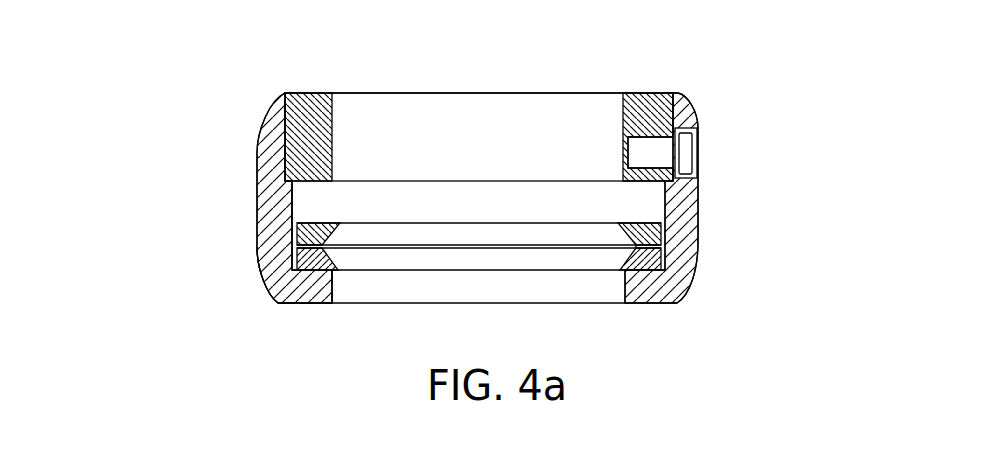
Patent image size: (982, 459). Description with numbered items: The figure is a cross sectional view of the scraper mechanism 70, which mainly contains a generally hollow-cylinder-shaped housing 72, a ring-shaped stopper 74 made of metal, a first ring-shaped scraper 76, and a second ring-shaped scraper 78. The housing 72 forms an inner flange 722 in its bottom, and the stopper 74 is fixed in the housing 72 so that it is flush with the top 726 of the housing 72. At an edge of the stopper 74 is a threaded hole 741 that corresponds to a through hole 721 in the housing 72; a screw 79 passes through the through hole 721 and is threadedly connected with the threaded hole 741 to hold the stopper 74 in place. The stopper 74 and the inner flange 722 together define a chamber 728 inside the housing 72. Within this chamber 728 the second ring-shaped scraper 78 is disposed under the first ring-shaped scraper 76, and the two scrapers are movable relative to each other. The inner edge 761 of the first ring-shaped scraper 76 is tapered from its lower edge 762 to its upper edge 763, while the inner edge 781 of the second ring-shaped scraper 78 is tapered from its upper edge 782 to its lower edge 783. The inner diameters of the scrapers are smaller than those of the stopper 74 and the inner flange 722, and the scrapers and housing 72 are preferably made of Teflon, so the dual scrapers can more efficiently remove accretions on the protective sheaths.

The scraper mechanism 70 is at (136, 146).
The housing 72 is at (686, 103).
The through hole 721 is at (697, 133).
The inner flange 722 is at (313, 298).
The top 726 is at (282, 93).
The chamber 728 is at (297, 210).
The ring-shaped stopper 74 is at (323, 93).
The threaded hole 741 is at (641, 144).
The screw 79 is at (687, 157).
The second ring-shaped scraper 78 is at (295, 269).
The inner edge of the second ring-shaped scraper 781 is at (334, 258).
The upper edge of the second ring-shaped scraper 782 is at (297, 229).
The lower edge of the second ring-shaped scraper 783 is at (278, 302).
The first ring-shaped scraper 76 is at (675, 270).
The inner edge of the first ring-shaped scraper 761 is at (622, 232).
The lower edge of the first ring-shaped scraper 762 is at (660, 268).
The upper edge of the first ring-shaped scraper 763 is at (655, 232).